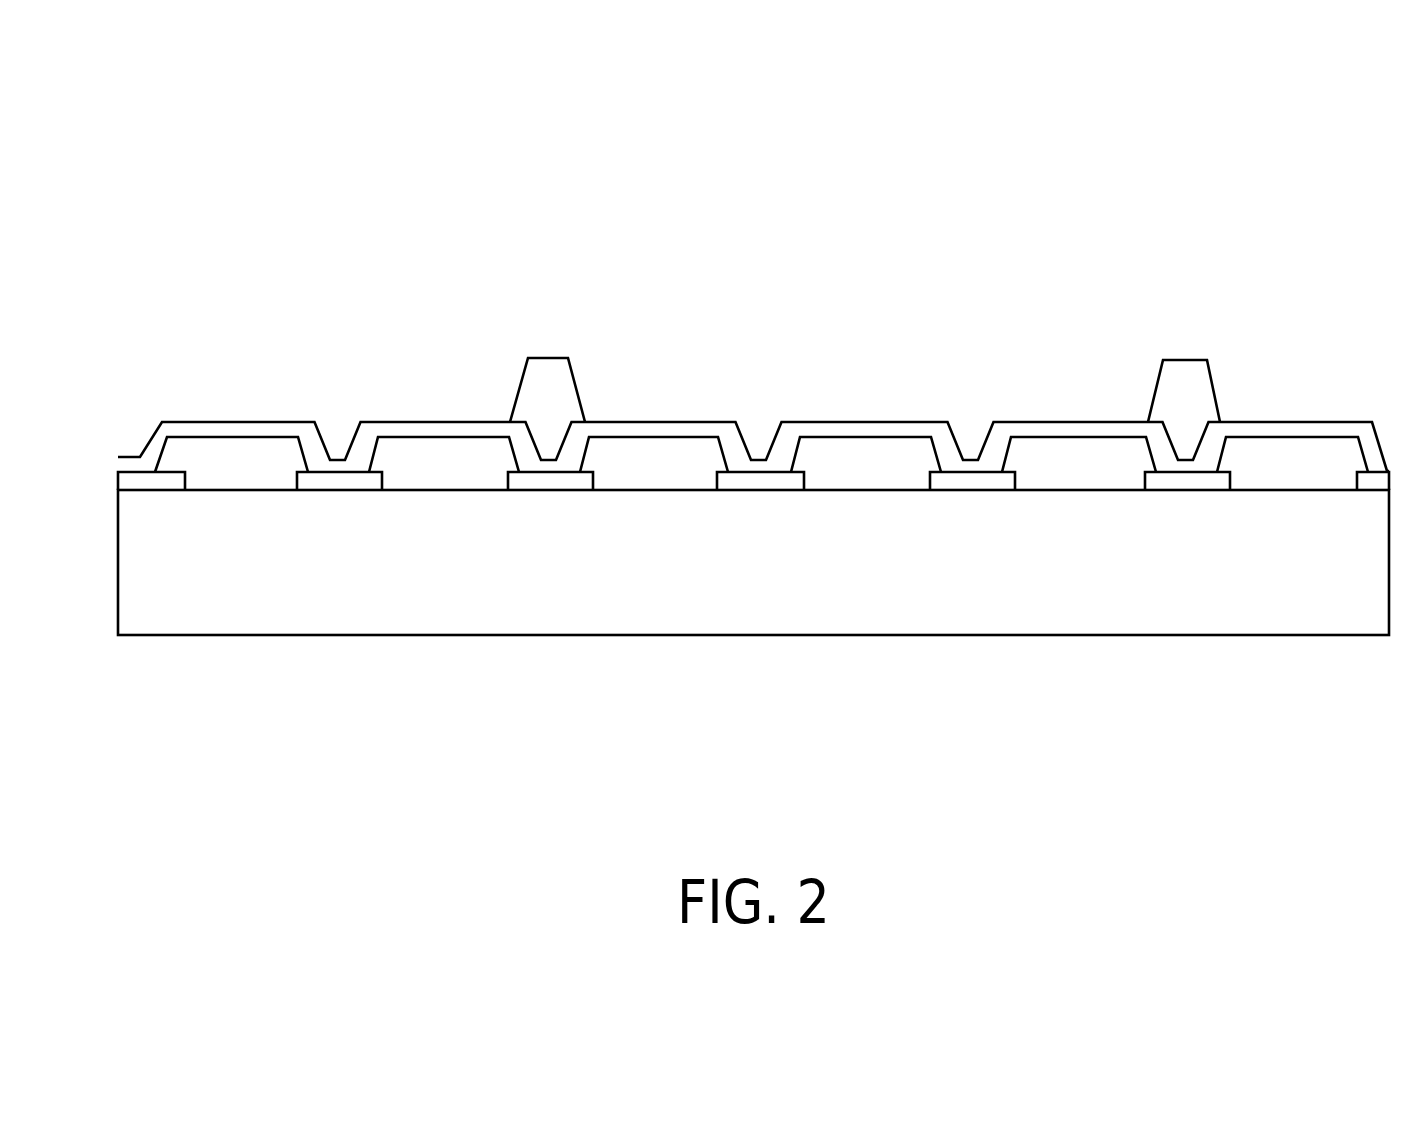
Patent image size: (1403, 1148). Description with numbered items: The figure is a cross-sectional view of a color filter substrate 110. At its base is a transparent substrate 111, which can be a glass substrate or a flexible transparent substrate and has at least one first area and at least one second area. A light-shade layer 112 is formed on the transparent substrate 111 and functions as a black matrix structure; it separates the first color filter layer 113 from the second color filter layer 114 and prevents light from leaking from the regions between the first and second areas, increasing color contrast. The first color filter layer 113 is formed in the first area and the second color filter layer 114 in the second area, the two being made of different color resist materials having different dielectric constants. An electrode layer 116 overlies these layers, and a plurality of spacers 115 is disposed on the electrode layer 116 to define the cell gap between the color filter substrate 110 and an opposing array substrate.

The color filter substrate 110 is at (212, 190).
The transparent substrate 111 is at (1240, 613).
The light-shade layer 112 is at (338, 480).
The first color filter layer 113 is at (233, 455).
The second color filter layer 114 is at (438, 478).
The spacers 115 is at (542, 382).
The electrode layer 116 is at (740, 407).